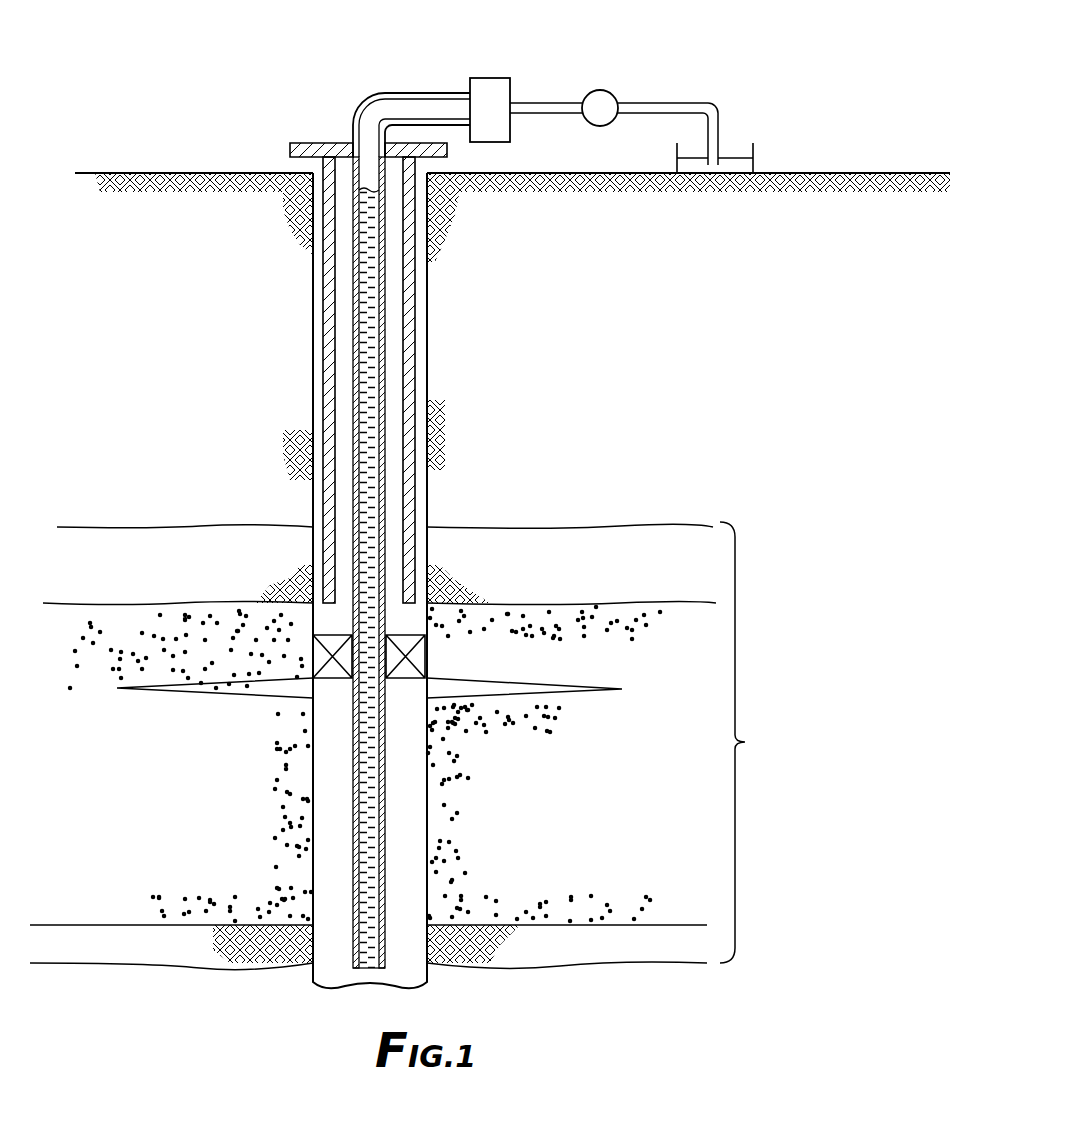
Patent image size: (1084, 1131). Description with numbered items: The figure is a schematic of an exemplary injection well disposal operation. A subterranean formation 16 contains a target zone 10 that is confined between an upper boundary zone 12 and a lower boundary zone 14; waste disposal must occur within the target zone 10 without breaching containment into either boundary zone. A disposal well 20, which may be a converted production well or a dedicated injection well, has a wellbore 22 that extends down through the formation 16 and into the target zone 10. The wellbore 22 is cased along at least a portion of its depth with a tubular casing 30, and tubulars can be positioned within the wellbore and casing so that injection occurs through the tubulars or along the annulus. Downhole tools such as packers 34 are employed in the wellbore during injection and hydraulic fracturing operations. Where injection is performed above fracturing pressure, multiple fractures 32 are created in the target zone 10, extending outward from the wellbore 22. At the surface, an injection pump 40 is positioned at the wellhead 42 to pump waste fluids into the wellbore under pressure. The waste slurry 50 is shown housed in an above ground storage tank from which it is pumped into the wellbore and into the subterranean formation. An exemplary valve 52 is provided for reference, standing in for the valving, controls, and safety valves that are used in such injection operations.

The target zone 10 is at (674, 762).
The upper boundary zone 12 is at (162, 579).
The lower boundary zone 14 is at (147, 957).
The formation 16 is at (745, 742).
The disposal well 20 is at (533, 467).
The wellbore 22 is at (428, 778).
The tubular casing 30 is at (407, 333).
The fractures 32 is at (553, 683).
The packers 34 is at (417, 655).
The injection pump 40 is at (603, 90).
The wellhead 42 is at (338, 119).
The waste slurry 50 is at (735, 150).
The valve 52 is at (505, 78).